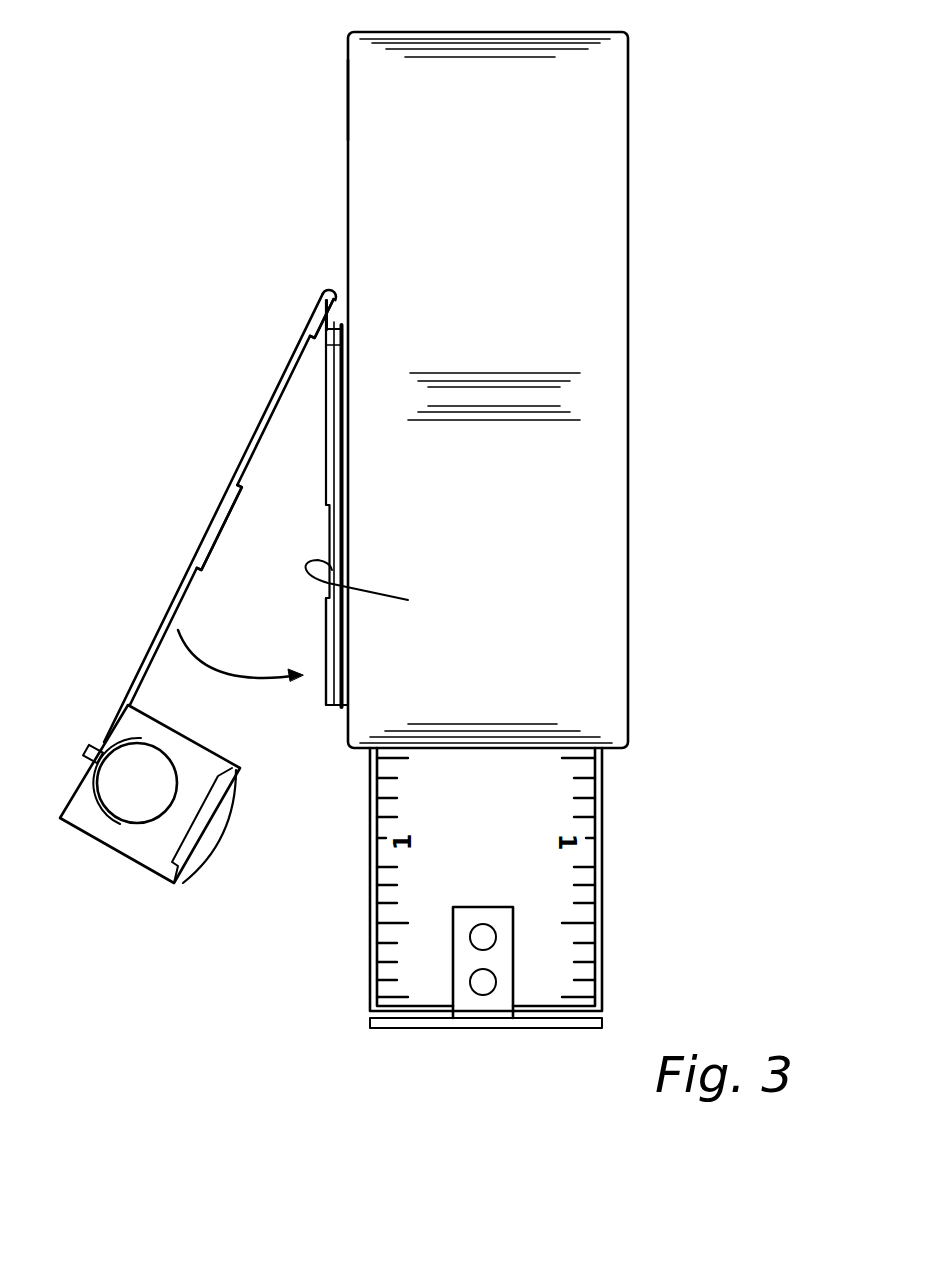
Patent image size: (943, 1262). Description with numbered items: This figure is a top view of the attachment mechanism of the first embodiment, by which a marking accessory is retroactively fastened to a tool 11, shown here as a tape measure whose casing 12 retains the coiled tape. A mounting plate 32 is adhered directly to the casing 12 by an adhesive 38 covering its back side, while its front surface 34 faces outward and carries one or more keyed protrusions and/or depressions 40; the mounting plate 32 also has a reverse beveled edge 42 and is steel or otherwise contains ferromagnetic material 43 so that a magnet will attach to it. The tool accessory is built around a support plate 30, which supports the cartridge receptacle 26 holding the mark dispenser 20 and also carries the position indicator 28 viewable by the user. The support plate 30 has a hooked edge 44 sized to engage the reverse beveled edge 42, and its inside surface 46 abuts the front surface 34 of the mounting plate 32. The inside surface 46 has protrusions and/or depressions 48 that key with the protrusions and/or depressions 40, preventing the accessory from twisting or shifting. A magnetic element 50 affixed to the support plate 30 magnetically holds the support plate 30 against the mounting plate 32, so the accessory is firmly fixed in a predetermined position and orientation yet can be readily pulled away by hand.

The tool 11 is at (645, 294).
The casing 12 is at (348, 104).
The mark dispenser 20 is at (135, 797).
The cartridge receptacle 26 is at (95, 745).
The position indicator 28 is at (213, 835).
The support plate 30 is at (248, 432).
The mounting plate 32 is at (325, 708).
The front surface 34 is at (323, 685).
The adhesive 38 is at (350, 490).
The keyed protrusions and/or depressions 40 is at (338, 347).
The reverse beveled edge 42 is at (337, 324).
The ferromagnetic material 43 is at (376, 589).
The hooked edge 44 is at (328, 288).
The inside surface 46 is at (175, 606).
The protrusions and/or depressions 48 is at (297, 343).
The magnetic element 50 is at (218, 526).